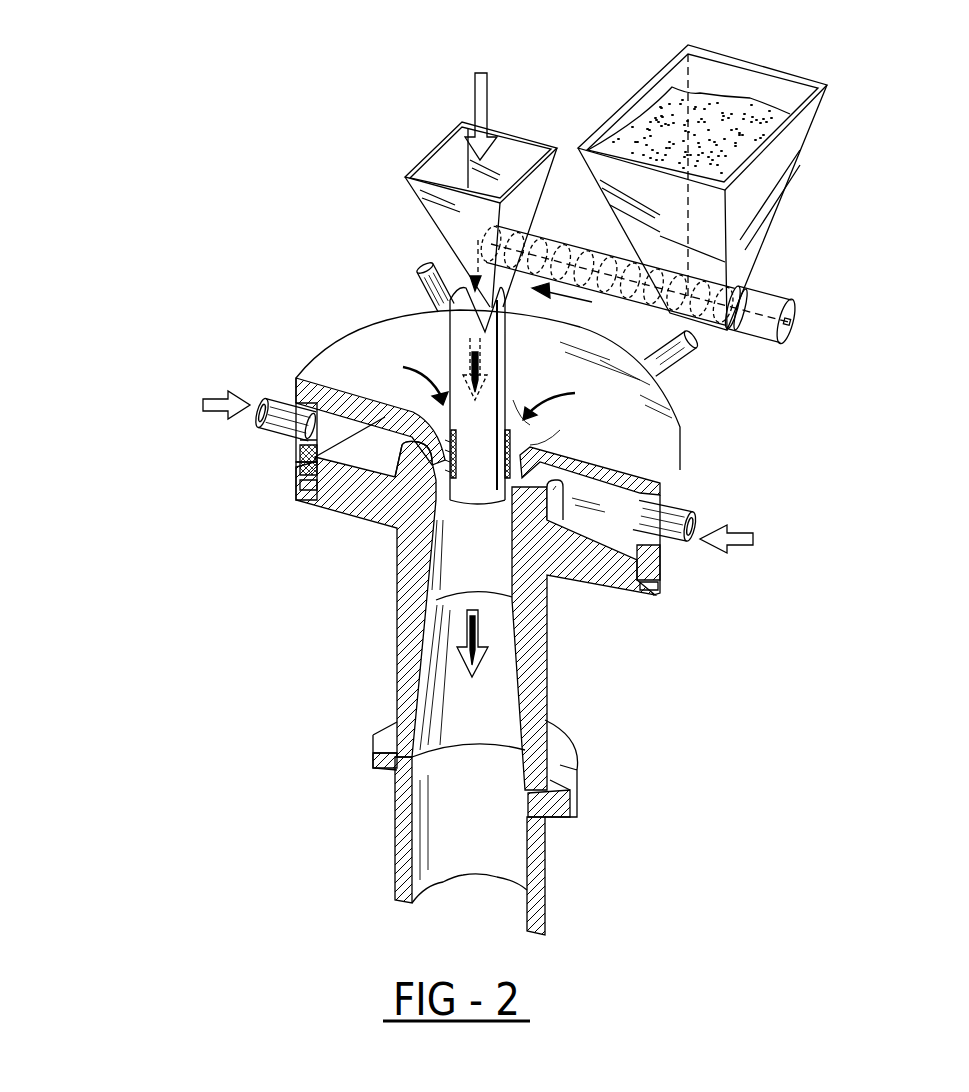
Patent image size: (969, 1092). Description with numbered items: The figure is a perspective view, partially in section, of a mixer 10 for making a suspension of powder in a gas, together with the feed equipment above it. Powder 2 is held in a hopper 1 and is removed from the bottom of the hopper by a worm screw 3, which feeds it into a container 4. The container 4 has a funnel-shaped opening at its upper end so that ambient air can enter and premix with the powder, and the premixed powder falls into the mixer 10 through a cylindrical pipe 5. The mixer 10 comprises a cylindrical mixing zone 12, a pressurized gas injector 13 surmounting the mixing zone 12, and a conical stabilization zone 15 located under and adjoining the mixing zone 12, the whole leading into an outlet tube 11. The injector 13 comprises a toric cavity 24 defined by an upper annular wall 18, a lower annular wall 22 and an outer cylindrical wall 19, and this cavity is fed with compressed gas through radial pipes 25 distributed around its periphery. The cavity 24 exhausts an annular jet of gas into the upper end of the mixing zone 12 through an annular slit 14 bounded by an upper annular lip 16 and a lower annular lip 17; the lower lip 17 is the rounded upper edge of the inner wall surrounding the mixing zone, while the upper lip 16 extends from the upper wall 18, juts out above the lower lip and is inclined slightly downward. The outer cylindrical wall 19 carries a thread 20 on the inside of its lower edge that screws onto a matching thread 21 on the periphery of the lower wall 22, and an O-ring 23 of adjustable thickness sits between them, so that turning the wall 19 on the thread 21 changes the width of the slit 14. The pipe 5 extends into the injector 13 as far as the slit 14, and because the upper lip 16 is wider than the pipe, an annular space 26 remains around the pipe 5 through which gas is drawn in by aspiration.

The hopper 1 is at (775, 213).
The powder 2 is at (708, 90).
The worm screw 3 is at (580, 246).
The container 4 is at (430, 214).
The cylindrical pipe 5 is at (458, 362).
The mixer 10 is at (327, 586).
The outlet tube 11 is at (398, 862).
The cylindrical mixing zone 12 is at (468, 638).
The pressurized gas injector 13 is at (473, 467).
The annular slit 14 is at (402, 432).
The conical stabilization zone 15 is at (470, 663).
The upper annular lip 16 is at (418, 395).
The lower annular lip 17 is at (400, 452).
The upper annular wall 18 is at (323, 365).
The outer cylindrical wall 19 is at (297, 453).
The thread 20 is at (300, 473).
The matching thread 21 is at (315, 487).
The lower annular wall 22 is at (375, 500).
The O-ring 23 is at (300, 485).
The toric cavity 24 is at (595, 487).
The radial pipes 25 is at (417, 290).
The annular space 26 is at (517, 393).